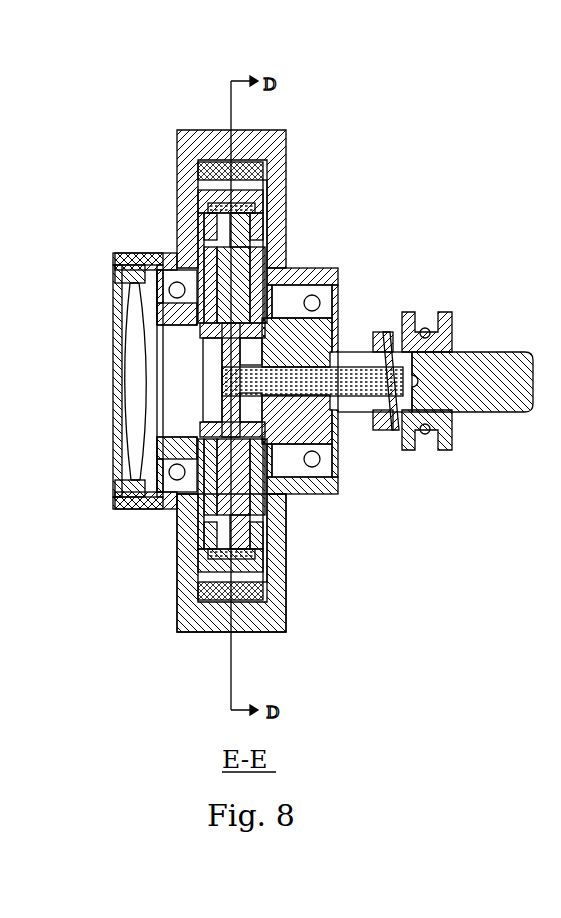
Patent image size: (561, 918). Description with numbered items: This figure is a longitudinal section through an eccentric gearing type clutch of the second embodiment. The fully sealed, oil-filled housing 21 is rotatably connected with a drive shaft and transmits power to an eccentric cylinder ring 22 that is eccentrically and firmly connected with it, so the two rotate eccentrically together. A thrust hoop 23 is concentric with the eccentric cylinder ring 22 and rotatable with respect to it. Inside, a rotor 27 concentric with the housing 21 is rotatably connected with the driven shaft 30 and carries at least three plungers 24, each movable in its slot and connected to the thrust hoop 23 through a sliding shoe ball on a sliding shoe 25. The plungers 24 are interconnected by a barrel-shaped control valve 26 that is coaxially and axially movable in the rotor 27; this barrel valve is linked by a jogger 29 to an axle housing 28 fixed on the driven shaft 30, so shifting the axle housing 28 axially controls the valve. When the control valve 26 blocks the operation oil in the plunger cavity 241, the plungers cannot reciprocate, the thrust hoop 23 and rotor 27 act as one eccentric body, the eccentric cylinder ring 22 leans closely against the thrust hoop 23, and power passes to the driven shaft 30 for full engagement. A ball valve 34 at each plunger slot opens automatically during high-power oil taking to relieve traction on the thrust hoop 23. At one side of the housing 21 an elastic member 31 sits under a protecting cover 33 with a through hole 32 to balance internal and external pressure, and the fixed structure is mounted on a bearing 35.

The housing 21 is at (178, 145).
The eccentric cylinder ring 22 is at (178, 630).
The thrust hoop 23 is at (282, 632).
The plunger 24 is at (200, 247).
The plunger cavity 241 is at (115, 255).
The sliding shoe 25 is at (267, 177).
The control valve 26 is at (222, 352).
The rotor 27 is at (285, 540).
The axle housing 28 is at (417, 322).
The jogger 29 is at (300, 380).
The driven shaft 30 is at (510, 393).
The elastic member 31 is at (115, 483).
The through hole 32 is at (115, 463).
The protecting cover 33 is at (113, 362).
The ball valve 34 is at (292, 270).
The bearing 35 is at (323, 460).